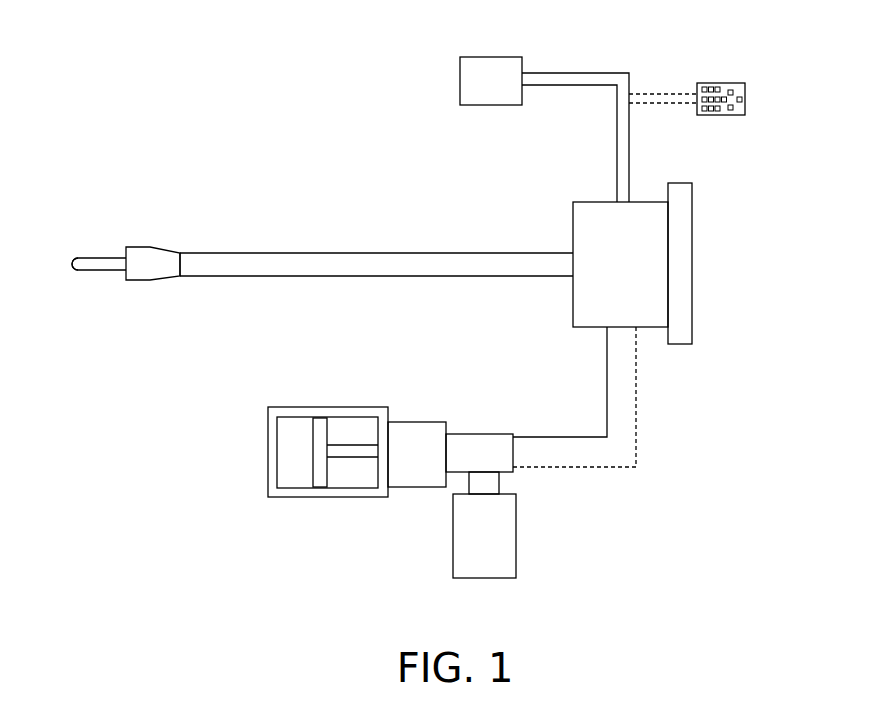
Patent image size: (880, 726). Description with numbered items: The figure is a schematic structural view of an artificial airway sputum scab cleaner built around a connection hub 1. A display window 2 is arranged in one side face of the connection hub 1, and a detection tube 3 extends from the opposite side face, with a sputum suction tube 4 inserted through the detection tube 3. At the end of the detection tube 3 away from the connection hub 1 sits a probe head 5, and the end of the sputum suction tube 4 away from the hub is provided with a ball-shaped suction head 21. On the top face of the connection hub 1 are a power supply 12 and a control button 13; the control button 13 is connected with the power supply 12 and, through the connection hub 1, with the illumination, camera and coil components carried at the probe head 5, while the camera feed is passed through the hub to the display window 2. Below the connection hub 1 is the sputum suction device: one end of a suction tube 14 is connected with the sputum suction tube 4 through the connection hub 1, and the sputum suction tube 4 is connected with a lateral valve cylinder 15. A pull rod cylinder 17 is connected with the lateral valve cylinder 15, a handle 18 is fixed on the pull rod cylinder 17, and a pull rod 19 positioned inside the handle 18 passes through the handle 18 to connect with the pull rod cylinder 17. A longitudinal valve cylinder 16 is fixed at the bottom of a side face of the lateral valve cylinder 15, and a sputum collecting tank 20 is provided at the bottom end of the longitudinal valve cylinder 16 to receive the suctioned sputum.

The connection hub 1 is at (637, 295).
The display window 2 is at (680, 257).
The detection tube 3 is at (253, 262).
The sputum suction tube 4 is at (102, 263).
The probe head 5 is at (147, 255).
The power supply 12 is at (490, 76).
The control button 13 is at (725, 98).
The suction tube 14 is at (627, 433).
The lateral valve cylinder 15 is at (480, 450).
The longitudinal valve cylinder 16 is at (490, 482).
The pull rod cylinder 17 is at (420, 447).
The handle 18 is at (275, 450).
The pull rod 19 is at (320, 473).
The sputum collecting tank 20 is at (475, 518).
The ball-shaped suction head 21 is at (72, 270).